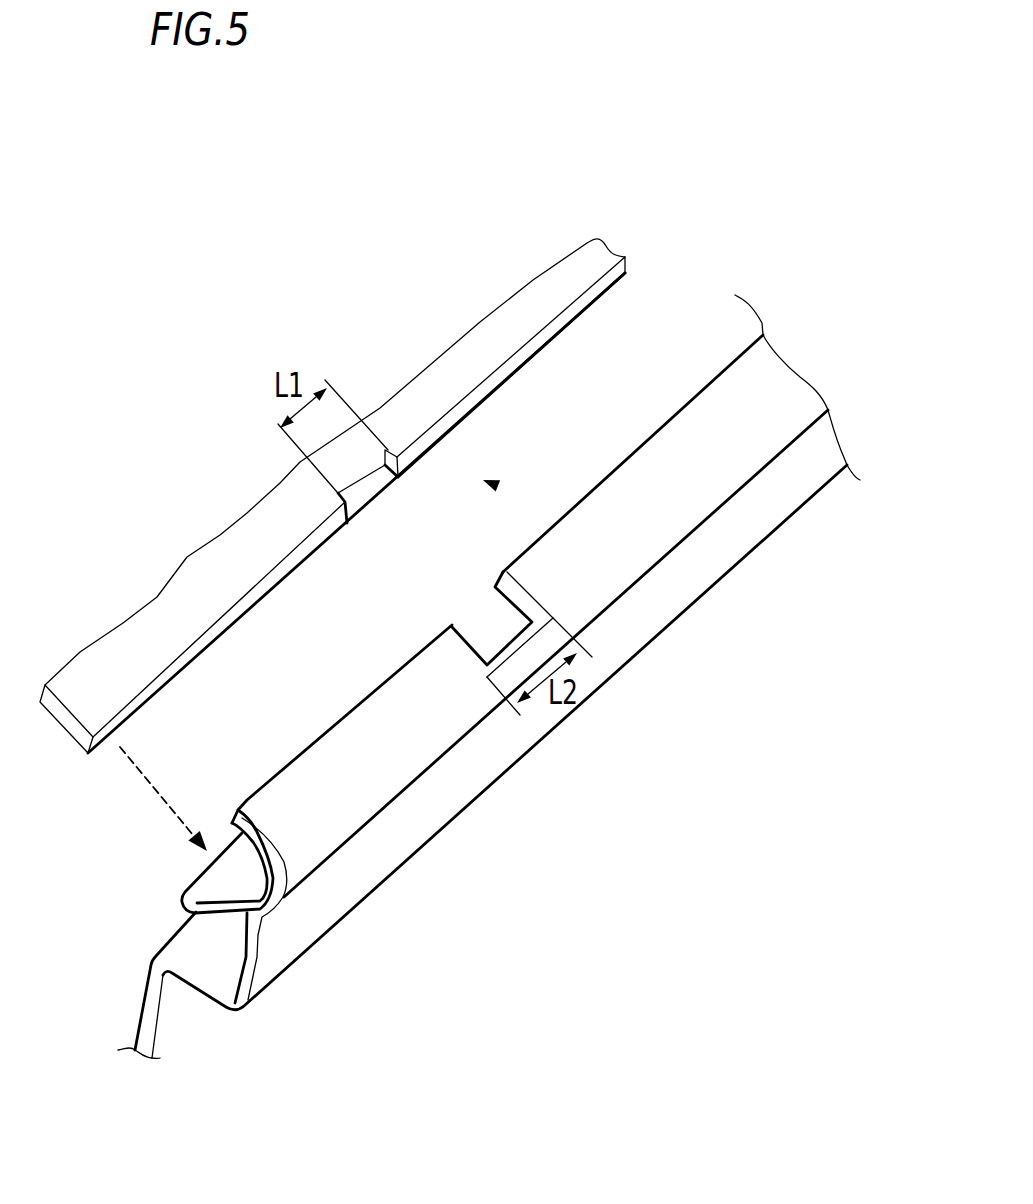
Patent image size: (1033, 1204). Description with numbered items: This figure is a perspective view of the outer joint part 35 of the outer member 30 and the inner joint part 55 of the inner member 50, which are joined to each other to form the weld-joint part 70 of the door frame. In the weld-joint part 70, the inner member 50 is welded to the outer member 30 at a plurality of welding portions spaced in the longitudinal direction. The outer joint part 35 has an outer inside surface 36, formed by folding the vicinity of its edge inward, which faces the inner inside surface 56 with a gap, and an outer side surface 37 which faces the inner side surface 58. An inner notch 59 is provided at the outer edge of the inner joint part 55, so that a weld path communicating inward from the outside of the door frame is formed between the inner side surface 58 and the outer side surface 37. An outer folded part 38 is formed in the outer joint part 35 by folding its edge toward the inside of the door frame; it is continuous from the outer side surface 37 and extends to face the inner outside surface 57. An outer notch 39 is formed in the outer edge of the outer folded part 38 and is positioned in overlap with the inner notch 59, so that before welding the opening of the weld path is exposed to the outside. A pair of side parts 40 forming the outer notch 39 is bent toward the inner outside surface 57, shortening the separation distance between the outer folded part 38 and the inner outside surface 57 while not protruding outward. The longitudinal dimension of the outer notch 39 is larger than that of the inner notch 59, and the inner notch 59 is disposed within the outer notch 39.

The outer member 30 is at (792, 550).
The outer joint part 35 is at (510, 750).
The outer inside surface 36 is at (213, 882).
The outer side surface 37 is at (216, 852).
The outer folded part 38 is at (350, 706).
The outer notch 39 is at (466, 626).
The side parts 40 is at (498, 582).
The inner member 50 is at (530, 229).
The inner joint part 55 is at (471, 335).
The inner inside surface 56 is at (57, 723).
The inner outside surface 57 is at (408, 396).
The inner side surface 58 is at (507, 368).
The inner notch 59 is at (385, 478).
The weld-joint part 70 is at (498, 486).